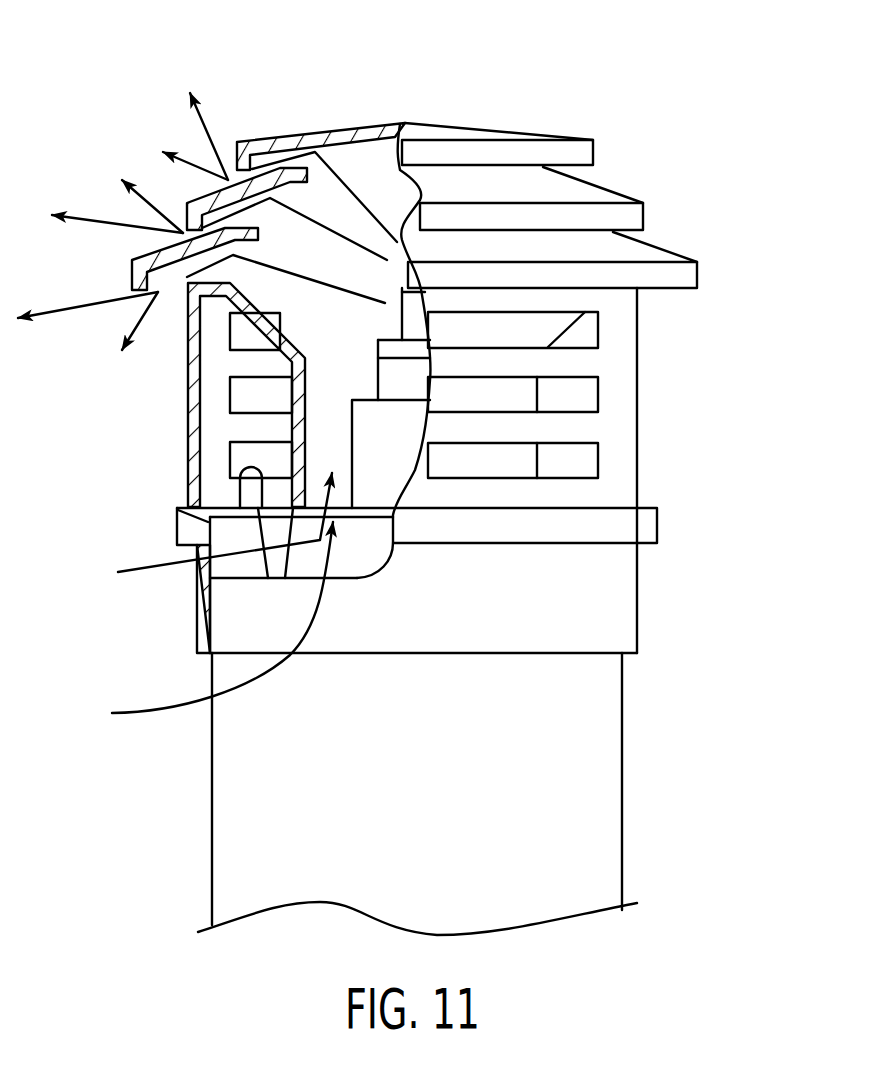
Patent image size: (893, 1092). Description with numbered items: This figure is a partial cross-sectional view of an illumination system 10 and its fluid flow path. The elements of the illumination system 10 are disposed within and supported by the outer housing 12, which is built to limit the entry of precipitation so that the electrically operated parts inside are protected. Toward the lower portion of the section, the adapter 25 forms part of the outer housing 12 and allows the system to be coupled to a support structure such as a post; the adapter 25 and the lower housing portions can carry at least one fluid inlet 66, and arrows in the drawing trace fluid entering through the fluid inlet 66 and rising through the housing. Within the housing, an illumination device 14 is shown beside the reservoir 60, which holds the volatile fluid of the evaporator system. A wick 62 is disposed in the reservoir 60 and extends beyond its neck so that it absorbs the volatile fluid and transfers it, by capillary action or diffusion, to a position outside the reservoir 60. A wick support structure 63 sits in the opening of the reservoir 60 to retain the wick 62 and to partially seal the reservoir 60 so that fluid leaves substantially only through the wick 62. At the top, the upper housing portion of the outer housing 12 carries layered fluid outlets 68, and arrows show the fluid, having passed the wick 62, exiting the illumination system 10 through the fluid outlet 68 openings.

The illumination system 10 is at (533, 77).
The outer housing 12 is at (697, 262).
The illumination device 14 is at (248, 497).
The adapter 25 is at (637, 597).
The reservoir 60 is at (400, 443).
The wick 62 is at (413, 320).
The wick support structure 63 is at (417, 347).
The fluid inlet 66 is at (197, 562).
The fluid outlet 68 is at (272, 160).